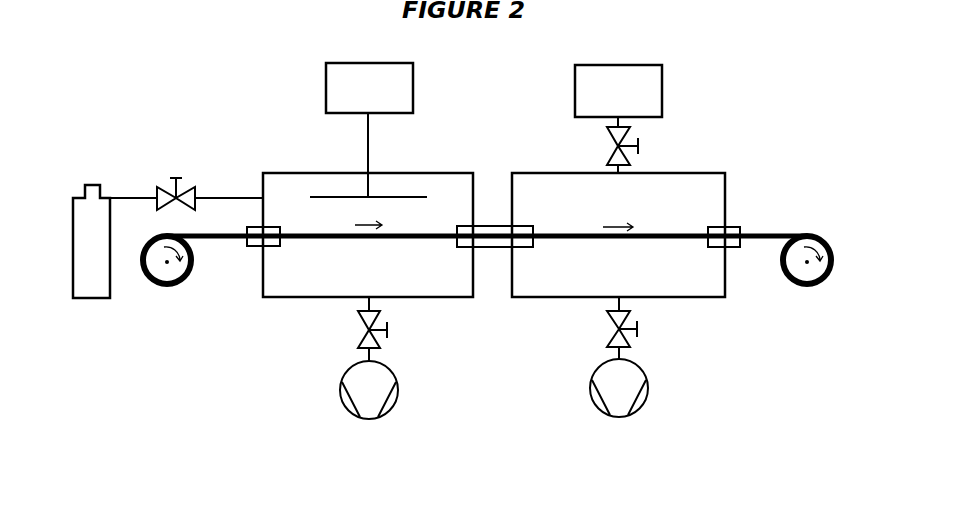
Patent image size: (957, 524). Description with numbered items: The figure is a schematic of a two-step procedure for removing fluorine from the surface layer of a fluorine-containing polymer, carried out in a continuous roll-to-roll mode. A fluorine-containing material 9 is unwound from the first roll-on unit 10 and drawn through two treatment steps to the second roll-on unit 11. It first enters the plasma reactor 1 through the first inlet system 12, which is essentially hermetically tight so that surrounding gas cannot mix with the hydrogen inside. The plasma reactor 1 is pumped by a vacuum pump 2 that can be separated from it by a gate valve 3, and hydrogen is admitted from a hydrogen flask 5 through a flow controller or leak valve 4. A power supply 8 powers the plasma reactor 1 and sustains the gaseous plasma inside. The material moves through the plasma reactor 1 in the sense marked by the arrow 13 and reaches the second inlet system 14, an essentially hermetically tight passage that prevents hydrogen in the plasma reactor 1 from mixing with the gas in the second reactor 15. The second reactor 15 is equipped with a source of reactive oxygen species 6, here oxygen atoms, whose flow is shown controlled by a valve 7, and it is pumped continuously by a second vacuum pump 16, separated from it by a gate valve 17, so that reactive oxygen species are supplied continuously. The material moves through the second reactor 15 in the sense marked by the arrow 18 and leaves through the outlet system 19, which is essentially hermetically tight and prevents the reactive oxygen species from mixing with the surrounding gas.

The plasma reactor 1 is at (425, 298).
The vacuum pump 2 is at (398, 395).
The gate valve 3 is at (362, 318).
The leak valve 4 is at (186, 188).
The hydrogen flask 5 is at (93, 180).
The source of reactive oxygen species 6 is at (662, 95).
The valve 7 is at (607, 148).
The power supply 8 is at (412, 90).
The fluorine-containing material 9 is at (203, 232).
The first roll-on unit 10 is at (163, 288).
The second roll-on unit 11 is at (807, 287).
The first inlet system 12 is at (257, 247).
The arrow 13 is at (375, 218).
The second inlet system 14 is at (482, 250).
The second reactor 15 is at (668, 300).
The second vacuum pump 16 is at (647, 397).
The gate valve 17 is at (610, 320).
The arrow 18 is at (613, 217).
The outlet system 19 is at (738, 227).